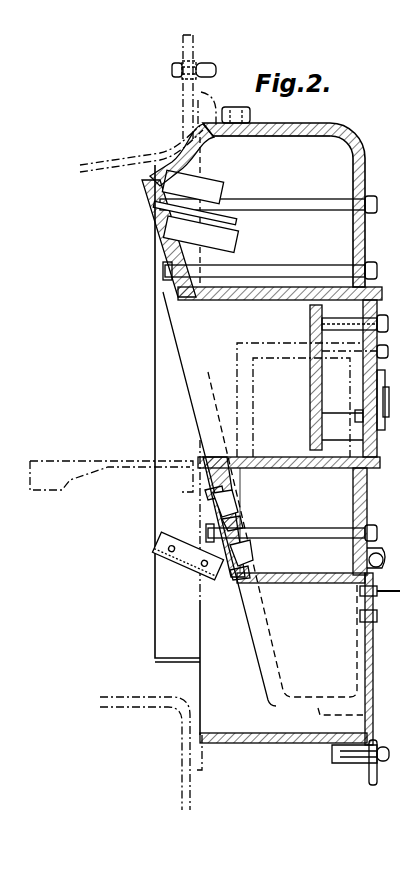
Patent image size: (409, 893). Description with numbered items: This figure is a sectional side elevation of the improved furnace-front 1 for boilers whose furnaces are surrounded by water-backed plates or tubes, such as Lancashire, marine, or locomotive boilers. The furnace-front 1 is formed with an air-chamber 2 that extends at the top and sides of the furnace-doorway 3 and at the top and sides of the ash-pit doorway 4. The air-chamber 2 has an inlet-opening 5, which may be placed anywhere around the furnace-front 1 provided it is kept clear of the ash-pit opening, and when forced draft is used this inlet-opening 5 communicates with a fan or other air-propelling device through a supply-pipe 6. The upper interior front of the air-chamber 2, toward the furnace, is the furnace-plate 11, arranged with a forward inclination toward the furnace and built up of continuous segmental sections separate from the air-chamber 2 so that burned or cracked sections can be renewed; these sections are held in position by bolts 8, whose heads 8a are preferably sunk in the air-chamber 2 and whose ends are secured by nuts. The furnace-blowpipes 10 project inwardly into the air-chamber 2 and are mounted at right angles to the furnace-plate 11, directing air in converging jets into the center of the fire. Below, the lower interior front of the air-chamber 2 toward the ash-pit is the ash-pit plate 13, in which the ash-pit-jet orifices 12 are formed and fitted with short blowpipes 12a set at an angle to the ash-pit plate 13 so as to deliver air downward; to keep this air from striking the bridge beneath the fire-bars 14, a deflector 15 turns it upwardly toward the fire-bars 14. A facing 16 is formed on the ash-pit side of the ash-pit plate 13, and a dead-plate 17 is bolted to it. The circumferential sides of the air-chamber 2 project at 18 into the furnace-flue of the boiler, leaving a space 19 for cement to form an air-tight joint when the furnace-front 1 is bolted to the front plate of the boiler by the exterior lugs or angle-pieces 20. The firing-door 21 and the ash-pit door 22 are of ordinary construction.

The furnace-front 1 is at (366, 236).
The air-chamber 2 is at (265, 354).
The furnace-doorway 3 is at (260, 499).
The ash-pit doorway 4 is at (294, 709).
The inlet-opening 5 is at (308, 407).
The supply-pipe 6 is at (267, 349).
The bolts 8 is at (323, 201).
The heads of the bolts 8a is at (163, 272).
The furnace-blowpipes 10 is at (212, 187).
The furnace-plate 11 is at (143, 193).
The ash-pit-jet orifices 12 is at (228, 493).
The short blowpipes 12a is at (235, 505).
The ash-pit plate 13 is at (213, 490).
The fire-bars 14 is at (110, 475).
The deflector 15 is at (183, 560).
The facing 16 is at (202, 478).
The dead-plate 17 is at (131, 464).
The projecting circumferential sides of the air-chamber 18 is at (152, 167).
The space for cement 19 is at (142, 158).
The exterior lugs or angle-pieces 20 is at (211, 93).
The firing-door 21 is at (379, 372).
The ash-pit door 22 is at (367, 657).